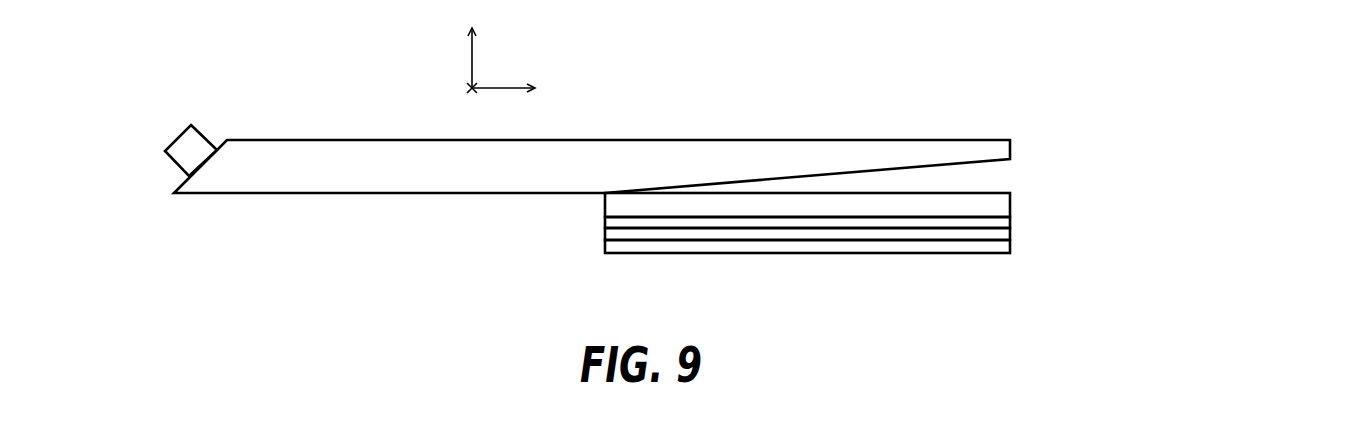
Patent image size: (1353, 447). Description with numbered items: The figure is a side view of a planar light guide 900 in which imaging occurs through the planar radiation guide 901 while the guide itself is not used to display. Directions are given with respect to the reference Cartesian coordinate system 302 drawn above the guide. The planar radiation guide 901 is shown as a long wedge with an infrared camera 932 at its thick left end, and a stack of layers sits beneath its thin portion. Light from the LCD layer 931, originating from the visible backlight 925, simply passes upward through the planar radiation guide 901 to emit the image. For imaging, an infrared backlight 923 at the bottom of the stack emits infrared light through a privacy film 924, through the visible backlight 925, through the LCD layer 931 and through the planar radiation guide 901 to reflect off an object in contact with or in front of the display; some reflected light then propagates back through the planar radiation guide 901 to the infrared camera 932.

The planar light guide 900 is at (407, 67).
The planar radiation guide 901 is at (407, 182).
The infrared camera 932 is at (209, 134).
The LCD layer 931 is at (1010, 200).
The visible backlight 925 is at (1010, 216).
The privacy film 924 is at (1010, 228).
The infrared backlight 923 is at (1010, 245).
The reference Cartesian coordinate system 302 is at (502, 88).